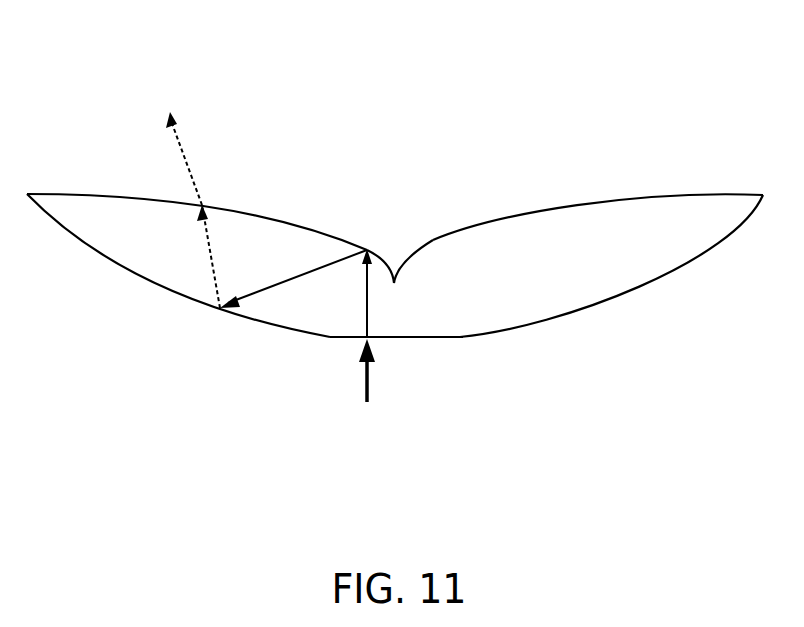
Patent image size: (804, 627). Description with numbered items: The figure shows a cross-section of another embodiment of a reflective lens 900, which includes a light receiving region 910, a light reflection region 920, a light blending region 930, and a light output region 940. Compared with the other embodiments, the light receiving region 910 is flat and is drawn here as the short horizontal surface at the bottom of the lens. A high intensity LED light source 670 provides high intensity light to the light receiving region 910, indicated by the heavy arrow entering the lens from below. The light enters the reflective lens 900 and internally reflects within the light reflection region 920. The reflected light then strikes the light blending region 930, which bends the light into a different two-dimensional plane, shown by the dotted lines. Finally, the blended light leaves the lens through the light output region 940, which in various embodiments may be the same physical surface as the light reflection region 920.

The reflective lens 900 is at (549, 70).
The light receiving region 910 is at (347, 340).
The light reflection region 920 is at (435, 233).
The light blending region 930 is at (138, 278).
The light output region 940 is at (602, 207).
The high intensity LED light source 670 is at (482, 448).